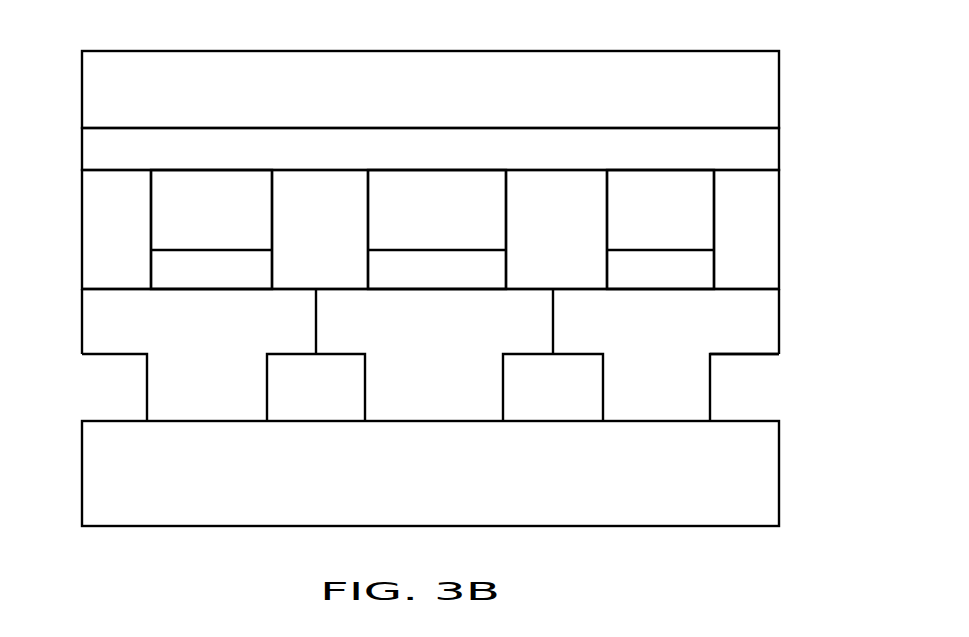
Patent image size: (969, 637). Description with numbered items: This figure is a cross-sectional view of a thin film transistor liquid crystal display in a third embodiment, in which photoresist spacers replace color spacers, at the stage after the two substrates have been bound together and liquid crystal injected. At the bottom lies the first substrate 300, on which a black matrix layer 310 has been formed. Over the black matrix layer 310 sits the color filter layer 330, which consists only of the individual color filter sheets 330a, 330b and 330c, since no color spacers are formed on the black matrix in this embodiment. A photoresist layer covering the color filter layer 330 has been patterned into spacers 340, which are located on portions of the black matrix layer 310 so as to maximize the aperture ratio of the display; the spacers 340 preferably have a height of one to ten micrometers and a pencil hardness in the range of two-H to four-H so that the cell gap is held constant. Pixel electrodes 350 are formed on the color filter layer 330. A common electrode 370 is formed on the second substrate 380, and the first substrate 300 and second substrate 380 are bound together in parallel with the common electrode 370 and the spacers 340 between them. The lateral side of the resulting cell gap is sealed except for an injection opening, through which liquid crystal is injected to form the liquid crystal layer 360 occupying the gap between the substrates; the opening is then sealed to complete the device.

The first substrate 300 is at (706, 497).
The black matrix layer 310 is at (98, 396).
The color filter layer 330 is at (487, 321).
The color filter sheet 330a is at (250, 338).
The color filter sheet 330b is at (470, 338).
The color filter sheet 330c is at (677, 340).
The spacers 340 is at (335, 212).
The pixel electrodes 350 is at (236, 259).
The liquid crystal layer 360 is at (230, 212).
The common electrode 370 is at (760, 146).
The second substrate 380 is at (760, 83).